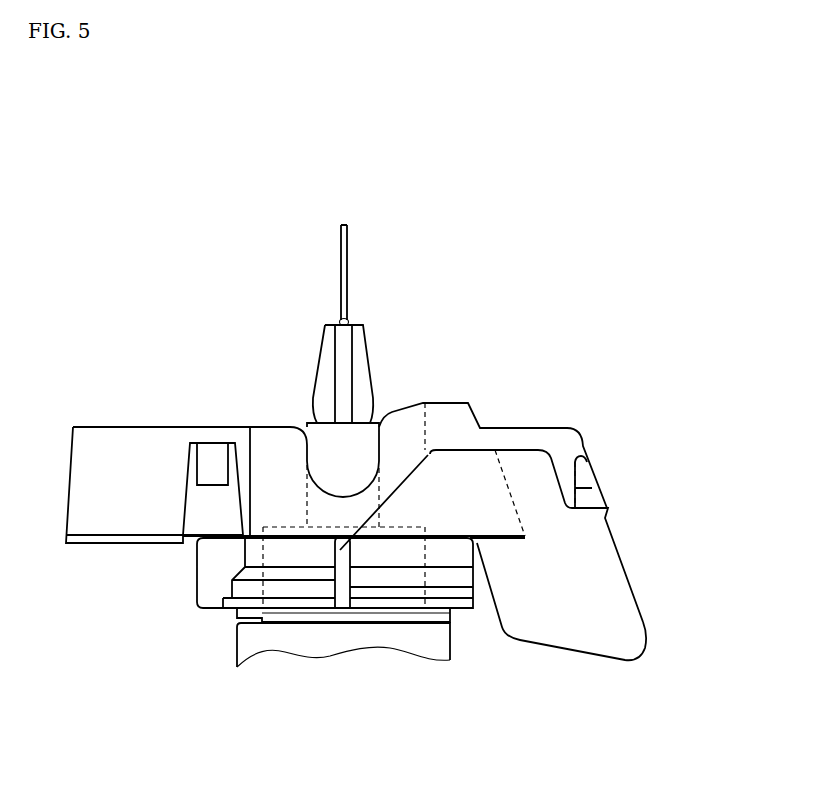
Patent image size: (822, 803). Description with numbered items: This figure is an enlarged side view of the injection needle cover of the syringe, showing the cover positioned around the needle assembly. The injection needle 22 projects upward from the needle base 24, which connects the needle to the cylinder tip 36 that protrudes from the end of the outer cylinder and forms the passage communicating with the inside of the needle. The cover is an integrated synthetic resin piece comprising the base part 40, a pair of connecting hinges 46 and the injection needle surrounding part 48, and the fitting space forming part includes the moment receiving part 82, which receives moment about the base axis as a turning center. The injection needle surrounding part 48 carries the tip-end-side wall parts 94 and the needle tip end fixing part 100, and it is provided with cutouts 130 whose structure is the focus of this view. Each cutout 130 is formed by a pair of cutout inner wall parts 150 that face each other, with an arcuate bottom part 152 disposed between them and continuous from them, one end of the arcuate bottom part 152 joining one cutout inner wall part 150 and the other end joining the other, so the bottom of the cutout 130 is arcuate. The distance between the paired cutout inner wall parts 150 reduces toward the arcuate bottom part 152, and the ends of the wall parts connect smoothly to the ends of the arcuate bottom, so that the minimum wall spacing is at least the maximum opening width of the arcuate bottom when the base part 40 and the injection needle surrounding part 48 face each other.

The injection needle 22 is at (335, 242).
The needle base 24 is at (352, 339).
The cylinder tip 36 is at (244, 629).
The base part 40 is at (191, 575).
The connecting hinge 46 is at (607, 497).
The injection needle surrounding part 48 is at (276, 419).
The moment receiving part 82 is at (625, 642).
The tip-end-side wall part 94 is at (133, 435).
The needle tip end fixing part 100 is at (207, 457).
The cutout 130 is at (314, 482).
The cutout inner wall part 150 is at (307, 412).
The arcuate bottom part 152 is at (344, 482).